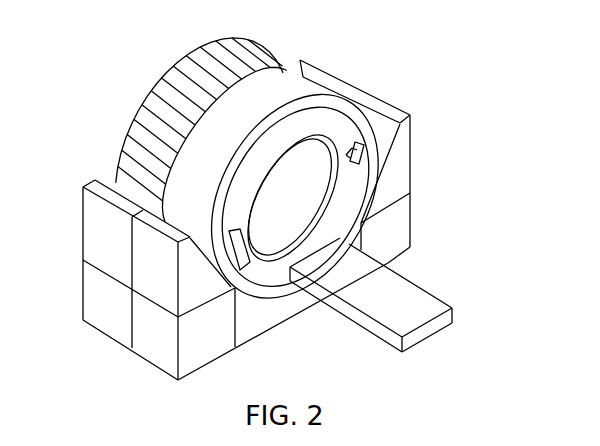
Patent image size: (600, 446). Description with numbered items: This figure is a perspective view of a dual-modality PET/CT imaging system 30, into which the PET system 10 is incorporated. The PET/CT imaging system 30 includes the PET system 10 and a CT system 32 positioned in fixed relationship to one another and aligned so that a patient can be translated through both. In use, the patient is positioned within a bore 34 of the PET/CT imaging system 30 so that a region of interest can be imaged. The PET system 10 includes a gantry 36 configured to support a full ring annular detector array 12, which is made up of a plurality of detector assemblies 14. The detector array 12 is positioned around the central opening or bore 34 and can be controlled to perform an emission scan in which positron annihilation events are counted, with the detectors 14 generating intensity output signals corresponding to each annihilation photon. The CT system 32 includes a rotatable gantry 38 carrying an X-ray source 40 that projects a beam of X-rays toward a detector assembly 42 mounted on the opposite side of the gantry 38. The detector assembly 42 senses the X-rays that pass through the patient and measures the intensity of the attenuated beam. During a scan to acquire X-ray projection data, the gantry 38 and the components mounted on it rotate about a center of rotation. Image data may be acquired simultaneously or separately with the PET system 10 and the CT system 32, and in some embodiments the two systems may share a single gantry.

The PET system 10 is at (113, 139).
The full ring annular detector array 12 is at (150, 84).
The detector assemblies 14 is at (168, 66).
The PET/CT imaging system 30 is at (440, 103).
The CT system 32 is at (290, 308).
The bore 34 is at (298, 220).
The gantry 36 is at (258, 44).
The rotatable gantry 38 is at (352, 115).
The X-ray source 40 is at (365, 149).
The detector assembly 42 is at (246, 270).